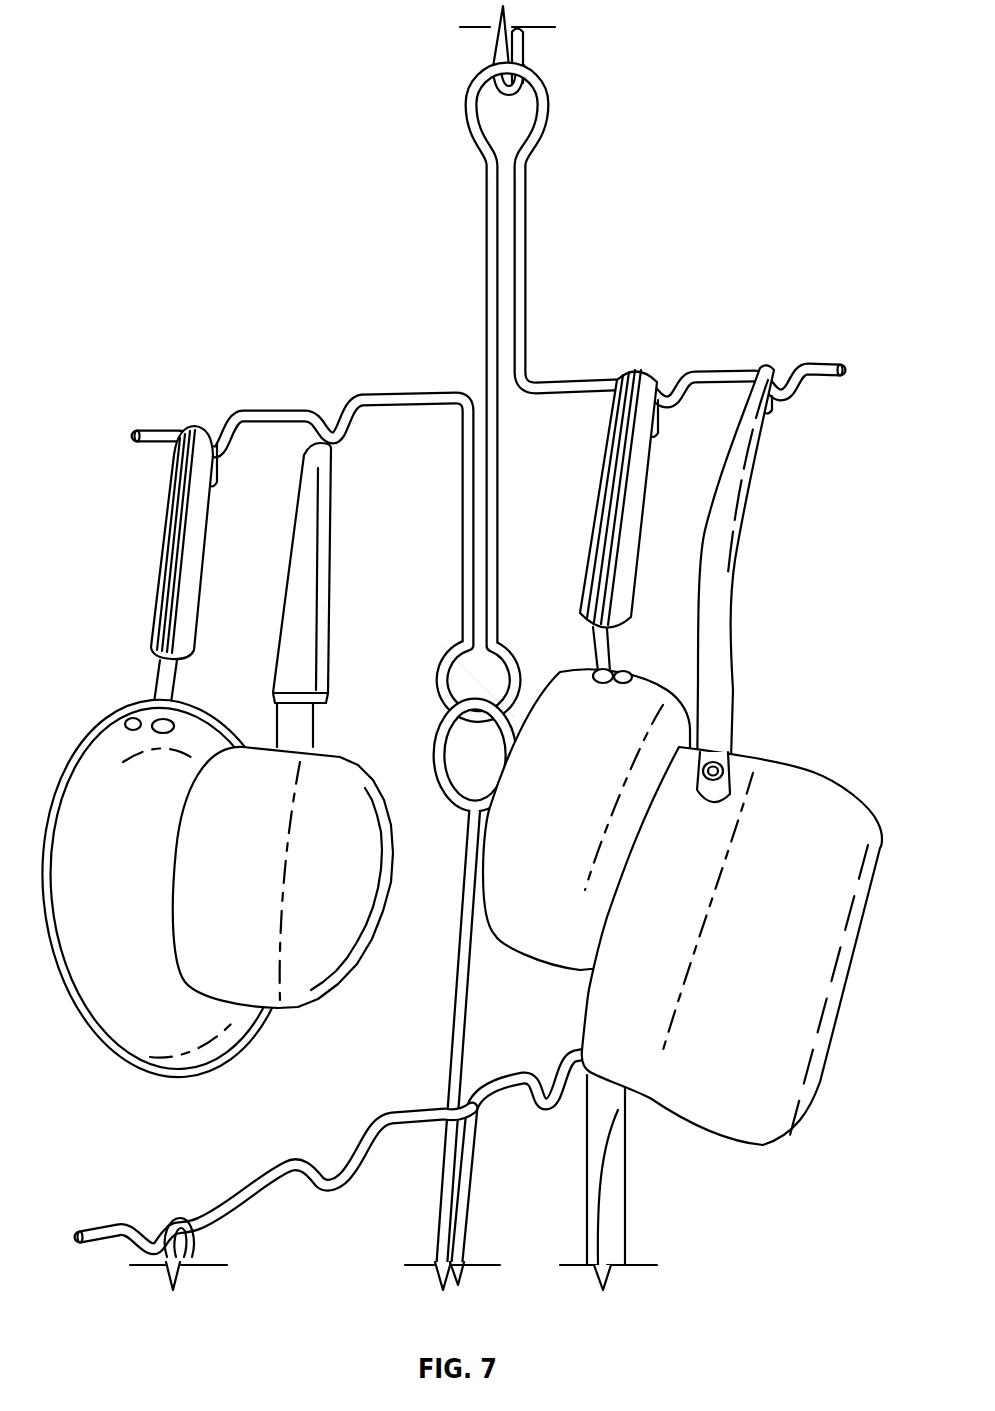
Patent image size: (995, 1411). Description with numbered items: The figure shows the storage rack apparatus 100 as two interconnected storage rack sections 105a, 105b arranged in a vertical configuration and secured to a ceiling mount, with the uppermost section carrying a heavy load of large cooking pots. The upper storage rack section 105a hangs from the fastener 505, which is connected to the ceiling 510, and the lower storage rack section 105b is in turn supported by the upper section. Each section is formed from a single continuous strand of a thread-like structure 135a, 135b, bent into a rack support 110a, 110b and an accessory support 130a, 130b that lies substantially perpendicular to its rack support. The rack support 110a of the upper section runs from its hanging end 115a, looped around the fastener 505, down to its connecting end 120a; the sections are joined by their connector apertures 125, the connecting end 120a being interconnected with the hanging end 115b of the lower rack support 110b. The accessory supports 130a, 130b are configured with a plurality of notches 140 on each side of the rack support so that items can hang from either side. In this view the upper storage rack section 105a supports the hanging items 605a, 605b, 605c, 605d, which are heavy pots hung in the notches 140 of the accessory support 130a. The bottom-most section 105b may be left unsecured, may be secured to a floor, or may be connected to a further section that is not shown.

The apparatus 100 is at (237, 172).
The storage rack section 105a is at (524, 220).
The storage rack section 105b is at (305, 1169).
The rack support 110a is at (488, 250).
The rack support 110b is at (455, 1003).
The hanging end 115a is at (459, 406).
The hanging end 115b is at (435, 997).
The connecting end 120a is at (462, 640).
The connector aperture 125 is at (552, 110).
The accessory support 130a is at (459, 392).
The accessory support 130b is at (305, 1169).
The thread-like structure 135a is at (157, 433).
The thread-like structure 135b is at (103, 1227).
The notch 140 is at (223, 450).
The fastener 505 is at (548, 68).
The ceiling 510 is at (533, 22).
The hanging item 605a is at (113, 1033).
The hanging item 605b is at (302, 968).
The hanging item 605c is at (645, 683).
The hanging item 605d is at (818, 767).